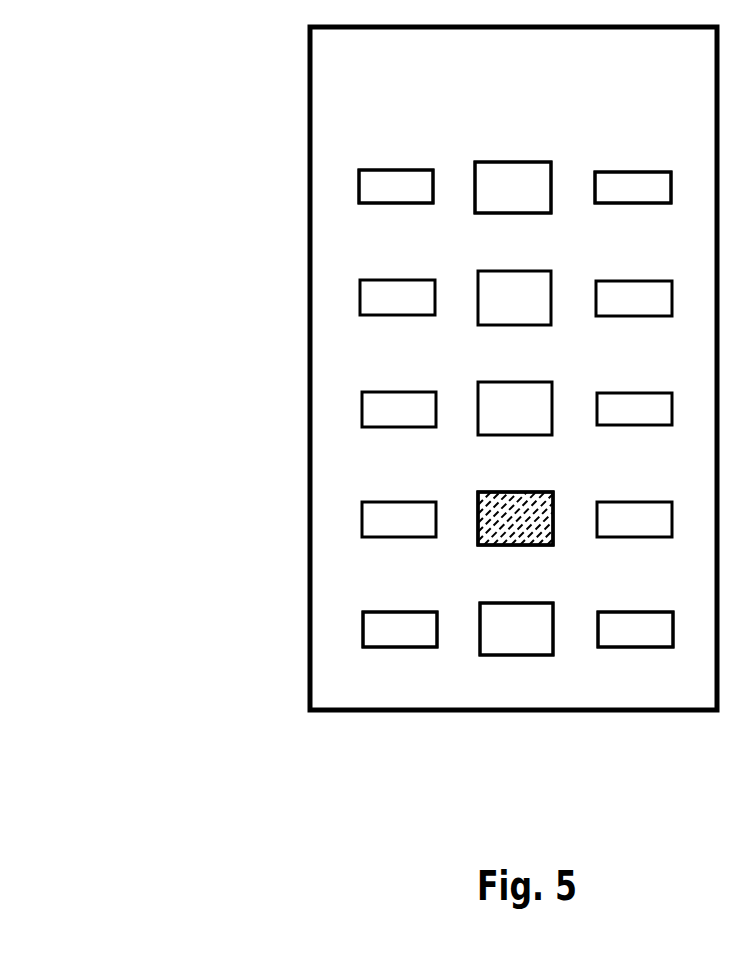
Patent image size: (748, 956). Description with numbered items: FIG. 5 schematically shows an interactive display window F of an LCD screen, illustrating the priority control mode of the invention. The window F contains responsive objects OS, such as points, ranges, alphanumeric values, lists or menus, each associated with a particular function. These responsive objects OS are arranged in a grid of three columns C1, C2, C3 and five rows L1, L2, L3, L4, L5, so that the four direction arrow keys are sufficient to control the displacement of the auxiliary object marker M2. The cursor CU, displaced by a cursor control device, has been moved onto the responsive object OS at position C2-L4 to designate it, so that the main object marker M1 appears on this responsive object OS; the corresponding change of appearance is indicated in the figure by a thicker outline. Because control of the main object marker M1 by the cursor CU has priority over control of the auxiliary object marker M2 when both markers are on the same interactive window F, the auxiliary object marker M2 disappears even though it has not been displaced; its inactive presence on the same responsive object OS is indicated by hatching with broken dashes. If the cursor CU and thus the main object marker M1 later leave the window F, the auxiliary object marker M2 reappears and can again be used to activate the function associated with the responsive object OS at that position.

The display window F is at (675, 710).
The row L1 is at (334, 188).
The row L2 is at (334, 300).
The row L3 is at (335, 412).
The row L4 is at (335, 523).
The row L5 is at (335, 633).
The column C1 is at (403, 688).
The column C2 is at (518, 688).
The column C3 is at (634, 688).
The responsive object OS is at (508, 213).
The main object marker M1 is at (503, 545).
The auxiliary object marker M2 is at (545, 492).
The cursor CU is at (522, 552).